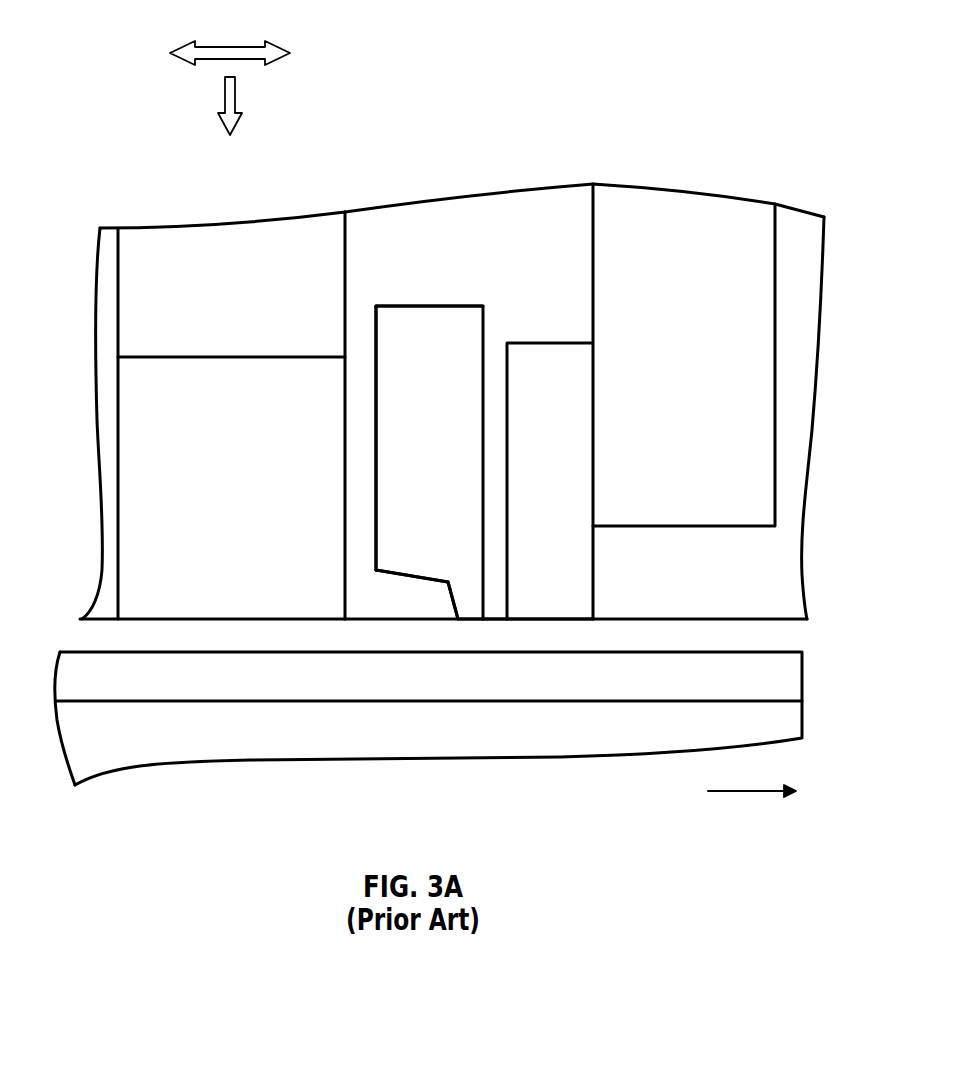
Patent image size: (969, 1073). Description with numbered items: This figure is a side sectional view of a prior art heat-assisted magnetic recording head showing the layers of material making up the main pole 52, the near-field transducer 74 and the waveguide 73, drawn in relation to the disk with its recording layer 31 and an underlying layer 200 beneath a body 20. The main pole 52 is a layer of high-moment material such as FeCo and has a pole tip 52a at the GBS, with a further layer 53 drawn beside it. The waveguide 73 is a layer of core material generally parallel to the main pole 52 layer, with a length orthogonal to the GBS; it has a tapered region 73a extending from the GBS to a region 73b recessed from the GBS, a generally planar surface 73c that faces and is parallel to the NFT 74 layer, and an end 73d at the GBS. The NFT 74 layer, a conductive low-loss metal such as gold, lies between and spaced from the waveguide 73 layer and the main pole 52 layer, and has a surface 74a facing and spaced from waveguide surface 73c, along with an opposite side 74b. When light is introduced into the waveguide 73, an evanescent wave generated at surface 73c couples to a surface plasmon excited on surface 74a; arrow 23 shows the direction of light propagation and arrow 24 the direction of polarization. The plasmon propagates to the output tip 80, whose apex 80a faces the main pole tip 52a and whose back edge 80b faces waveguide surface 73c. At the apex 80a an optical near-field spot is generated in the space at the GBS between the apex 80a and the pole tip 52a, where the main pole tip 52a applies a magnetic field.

The slider 20 is at (737, 792).
The arrow 23 is at (222, 108).
The arrow 24 is at (262, 45).
The recording layer 31 is at (788, 684).
The main pole 52 is at (580, 582).
The pole tip 52a is at (578, 620).
The yoke layer 53 is at (758, 267).
The waveguide 73 is at (157, 240).
The tapered region 73a is at (135, 538).
The region recessed from the GBS 73b is at (202, 355).
The planar surface 73c is at (347, 475).
The end 73d is at (152, 620).
The near-field transducer 74 is at (460, 337).
The surface 74a is at (375, 383).
The side surface of second layer 74b is at (387, 303).
The output tip 80 is at (462, 595).
The apex 80a is at (483, 619).
The back edge 80b is at (376, 568).
The substrate 200 is at (788, 722).
The gas bearing surface GBS is at (793, 620).